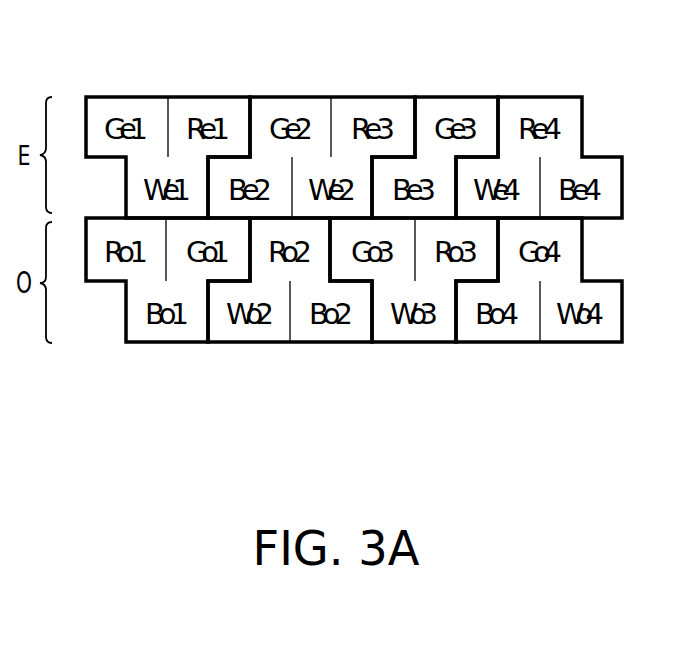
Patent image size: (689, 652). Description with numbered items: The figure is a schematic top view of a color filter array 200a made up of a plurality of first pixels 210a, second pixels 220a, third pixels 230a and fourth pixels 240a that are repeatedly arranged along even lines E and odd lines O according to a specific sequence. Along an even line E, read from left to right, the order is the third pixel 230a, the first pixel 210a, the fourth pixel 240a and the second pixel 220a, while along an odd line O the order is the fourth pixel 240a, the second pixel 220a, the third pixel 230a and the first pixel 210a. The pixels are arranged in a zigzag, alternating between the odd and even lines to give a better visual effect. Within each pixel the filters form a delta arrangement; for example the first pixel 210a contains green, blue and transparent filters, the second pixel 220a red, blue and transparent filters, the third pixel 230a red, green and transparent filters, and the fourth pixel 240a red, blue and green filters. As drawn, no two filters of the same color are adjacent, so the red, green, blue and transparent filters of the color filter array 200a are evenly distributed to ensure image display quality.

The third pixel 230a is at (127, 94).
The first pixel 210a is at (292, 94).
The fourth pixel 240a is at (458, 94).
The second pixel 220a is at (542, 94).
The color filter array 200a is at (596, 453).